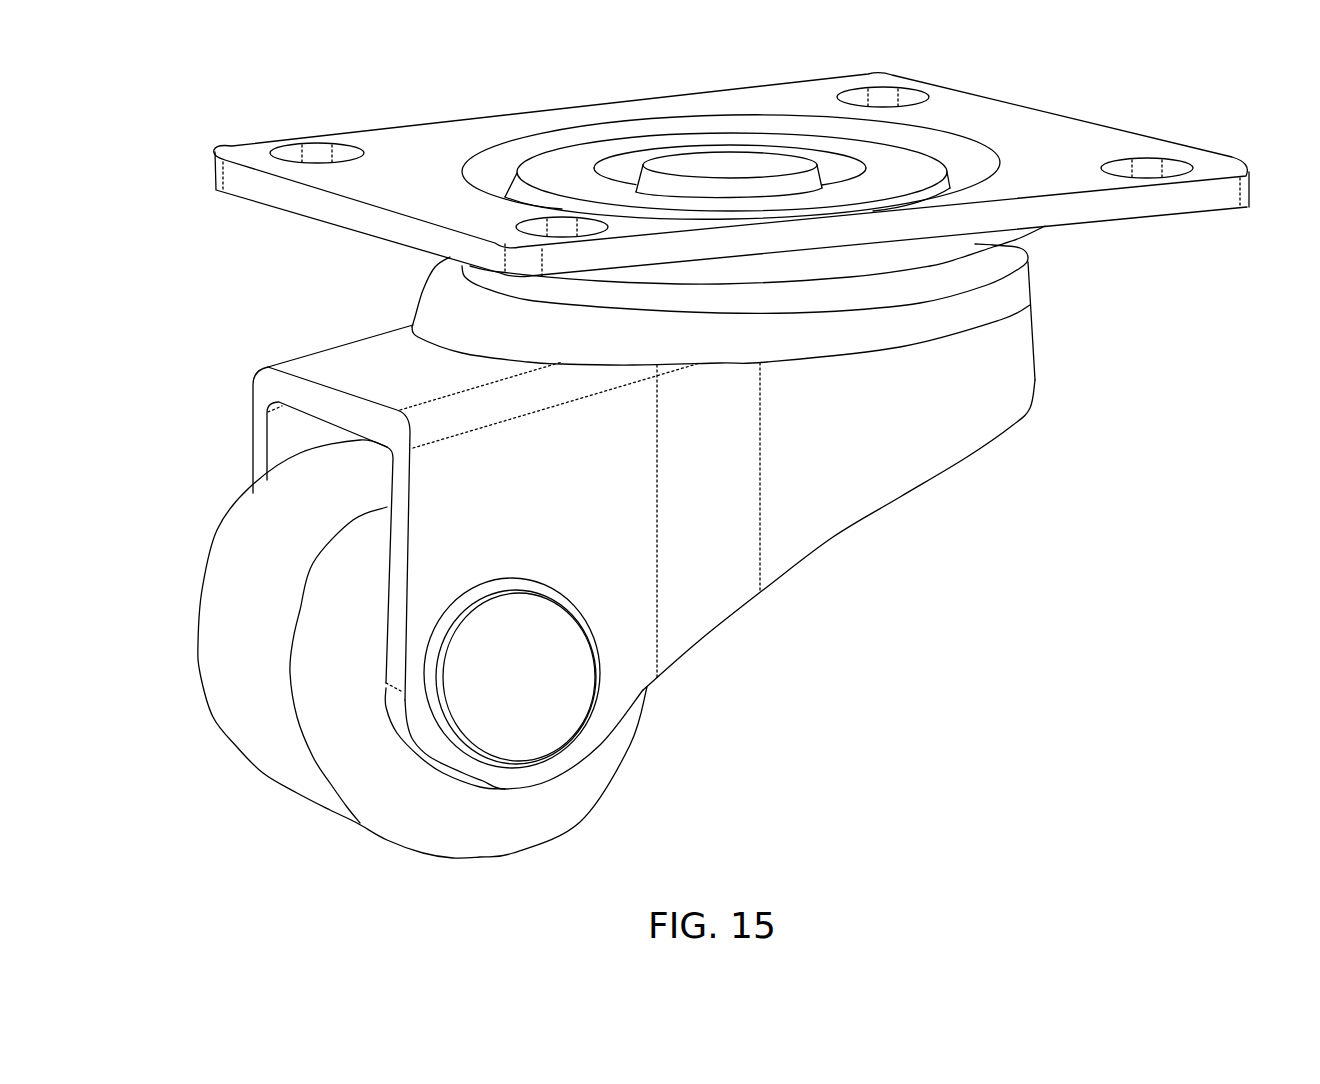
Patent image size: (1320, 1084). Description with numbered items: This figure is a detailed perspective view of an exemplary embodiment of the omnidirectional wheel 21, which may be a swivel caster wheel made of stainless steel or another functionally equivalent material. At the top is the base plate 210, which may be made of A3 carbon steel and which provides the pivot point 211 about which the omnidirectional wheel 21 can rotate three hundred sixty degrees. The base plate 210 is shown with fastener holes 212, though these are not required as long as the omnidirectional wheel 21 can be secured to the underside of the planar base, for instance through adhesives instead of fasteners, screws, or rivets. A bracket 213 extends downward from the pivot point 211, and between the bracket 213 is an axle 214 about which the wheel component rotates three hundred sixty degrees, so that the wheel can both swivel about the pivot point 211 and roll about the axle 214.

The omnidirectional wheel 21 is at (623, 728).
The base plate 210 is at (408, 147).
The pivot point 211 is at (702, 157).
The fastener holes 212 is at (1140, 165).
The bracket 213 is at (255, 381).
The axle 214 is at (522, 684).